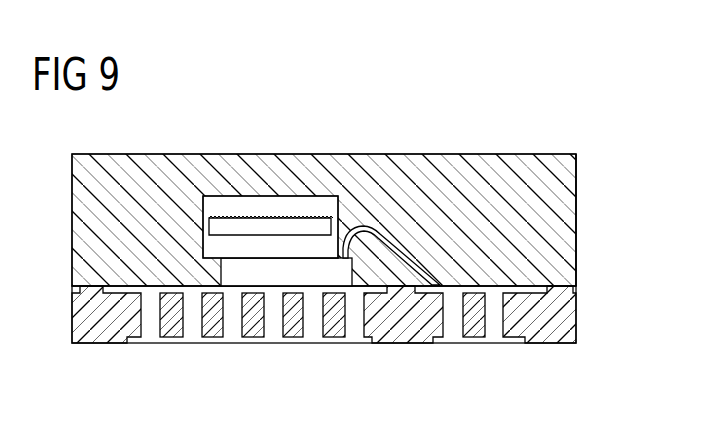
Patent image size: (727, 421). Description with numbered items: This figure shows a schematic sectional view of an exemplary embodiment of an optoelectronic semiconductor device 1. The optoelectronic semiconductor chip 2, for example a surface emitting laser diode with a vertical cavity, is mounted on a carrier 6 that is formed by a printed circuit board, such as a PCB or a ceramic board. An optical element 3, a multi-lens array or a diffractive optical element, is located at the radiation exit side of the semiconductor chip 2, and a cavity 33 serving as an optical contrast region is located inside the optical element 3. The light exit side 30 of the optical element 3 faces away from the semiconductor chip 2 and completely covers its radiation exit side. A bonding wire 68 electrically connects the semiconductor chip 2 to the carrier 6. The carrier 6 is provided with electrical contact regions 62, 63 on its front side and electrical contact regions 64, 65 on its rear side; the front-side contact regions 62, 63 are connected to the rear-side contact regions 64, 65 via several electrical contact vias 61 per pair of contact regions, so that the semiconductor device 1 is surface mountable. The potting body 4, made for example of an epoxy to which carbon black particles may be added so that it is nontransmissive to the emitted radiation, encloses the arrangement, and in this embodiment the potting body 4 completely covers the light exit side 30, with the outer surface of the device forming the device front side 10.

The optoelectronic semiconductor device 1 is at (585, 117).
The device front side 10 is at (488, 154).
The potting body 4 is at (567, 221).
The optoelectronic semiconductor chip 2 is at (281, 272).
The optical element 3 is at (215, 200).
The light exit side 30 is at (283, 196).
The cavity 33 is at (254, 228).
The bonding wire 68 is at (380, 228).
The carrier 6 is at (403, 330).
The electrical contact vias 61 is at (455, 330).
The electrical contact region 62 is at (97, 292).
The electrical contact region 63 is at (549, 289).
The electrical contact region 64 is at (175, 340).
The electrical contact region 65 is at (514, 336).